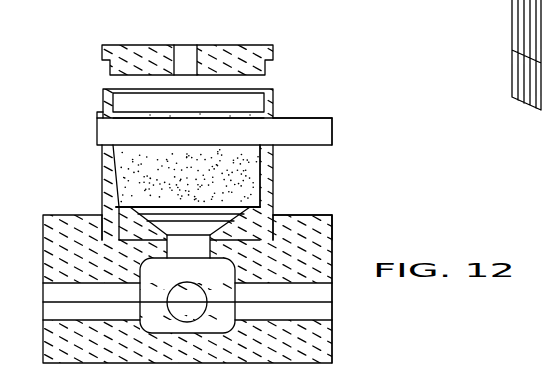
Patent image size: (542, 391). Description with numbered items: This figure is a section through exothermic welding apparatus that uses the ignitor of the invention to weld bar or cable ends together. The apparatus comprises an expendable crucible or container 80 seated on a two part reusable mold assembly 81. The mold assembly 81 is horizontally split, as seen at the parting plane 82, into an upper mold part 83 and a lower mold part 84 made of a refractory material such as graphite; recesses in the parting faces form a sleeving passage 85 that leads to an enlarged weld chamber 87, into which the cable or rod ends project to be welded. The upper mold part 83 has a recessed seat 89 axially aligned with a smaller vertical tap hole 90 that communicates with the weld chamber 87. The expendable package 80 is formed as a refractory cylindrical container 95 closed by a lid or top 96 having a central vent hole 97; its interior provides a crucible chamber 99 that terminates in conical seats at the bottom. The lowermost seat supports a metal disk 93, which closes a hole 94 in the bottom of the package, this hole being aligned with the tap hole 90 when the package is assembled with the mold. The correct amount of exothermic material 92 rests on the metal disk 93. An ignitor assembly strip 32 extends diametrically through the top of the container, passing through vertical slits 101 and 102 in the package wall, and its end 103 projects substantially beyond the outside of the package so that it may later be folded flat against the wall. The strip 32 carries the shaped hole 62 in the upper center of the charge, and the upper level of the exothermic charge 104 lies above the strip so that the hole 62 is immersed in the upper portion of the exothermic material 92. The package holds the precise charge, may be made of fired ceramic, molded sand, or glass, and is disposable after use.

The ignitor assembly strip 32 is at (309, 117).
The shaped hole 62 is at (188, 133).
The expendable crucible or container 80 is at (278, 179).
The mold assembly 81 is at (337, 248).
The horizontal split 82 is at (332, 297).
The upper mold part 83 is at (62, 228).
The lower mold part 84 is at (323, 350).
The sleeving passage 85 is at (322, 313).
The weld chamber 87 is at (162, 322).
The recessed seat 89 is at (102, 225).
The tap hole 90 is at (194, 240).
The exothermic material 92 is at (245, 187).
The metal disk 93 is at (333, 226).
The hole 94 is at (182, 238).
The refractory cylindrical container 95 is at (102, 162).
The lid or top 96 is at (247, 55).
The central vent hole 97 is at (190, 53).
The crucible chamber 99 is at (268, 97).
The vertical slit 101 is at (98, 122).
The vertical slit 102 is at (272, 120).
The end of ignitor 103 is at (333, 135).
The upper level of exothermic charge 104 is at (223, 112).